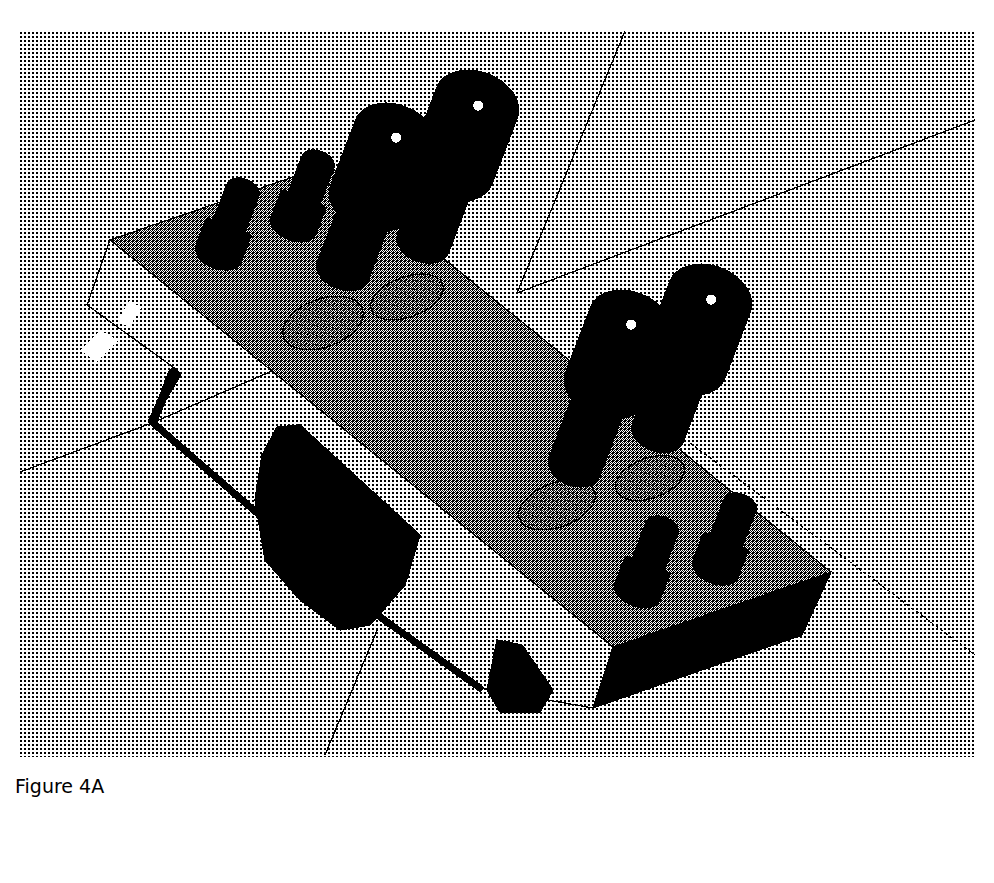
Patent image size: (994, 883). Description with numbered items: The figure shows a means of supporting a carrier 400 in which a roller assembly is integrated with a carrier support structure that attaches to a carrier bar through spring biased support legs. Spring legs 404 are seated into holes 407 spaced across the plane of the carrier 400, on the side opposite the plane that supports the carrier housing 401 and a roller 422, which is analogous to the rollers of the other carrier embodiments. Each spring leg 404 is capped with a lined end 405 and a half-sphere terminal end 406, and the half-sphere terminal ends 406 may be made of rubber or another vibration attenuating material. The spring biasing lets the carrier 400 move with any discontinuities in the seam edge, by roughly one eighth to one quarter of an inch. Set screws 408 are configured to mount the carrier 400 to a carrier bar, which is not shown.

The carrier 400 is at (475, 421).
The housing 401 is at (466, 640).
The spring legs 404 is at (730, 365).
The lined ends 405 is at (610, 287).
The half-sphere terminal ends 406 is at (720, 275).
The holes 407 is at (660, 472).
The set screws 408 is at (745, 522).
The roller 422 is at (268, 556).